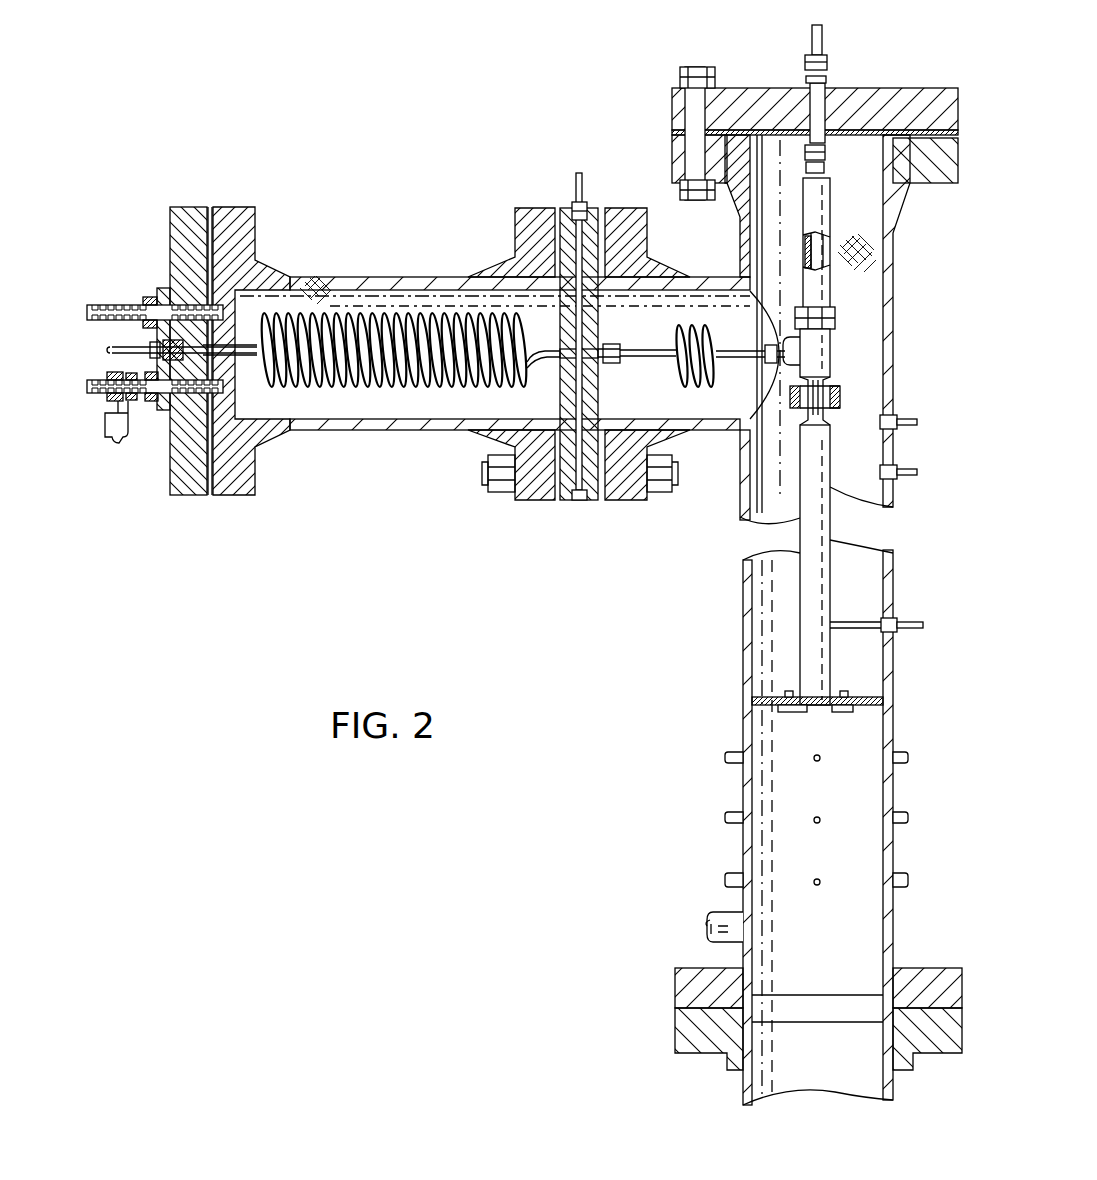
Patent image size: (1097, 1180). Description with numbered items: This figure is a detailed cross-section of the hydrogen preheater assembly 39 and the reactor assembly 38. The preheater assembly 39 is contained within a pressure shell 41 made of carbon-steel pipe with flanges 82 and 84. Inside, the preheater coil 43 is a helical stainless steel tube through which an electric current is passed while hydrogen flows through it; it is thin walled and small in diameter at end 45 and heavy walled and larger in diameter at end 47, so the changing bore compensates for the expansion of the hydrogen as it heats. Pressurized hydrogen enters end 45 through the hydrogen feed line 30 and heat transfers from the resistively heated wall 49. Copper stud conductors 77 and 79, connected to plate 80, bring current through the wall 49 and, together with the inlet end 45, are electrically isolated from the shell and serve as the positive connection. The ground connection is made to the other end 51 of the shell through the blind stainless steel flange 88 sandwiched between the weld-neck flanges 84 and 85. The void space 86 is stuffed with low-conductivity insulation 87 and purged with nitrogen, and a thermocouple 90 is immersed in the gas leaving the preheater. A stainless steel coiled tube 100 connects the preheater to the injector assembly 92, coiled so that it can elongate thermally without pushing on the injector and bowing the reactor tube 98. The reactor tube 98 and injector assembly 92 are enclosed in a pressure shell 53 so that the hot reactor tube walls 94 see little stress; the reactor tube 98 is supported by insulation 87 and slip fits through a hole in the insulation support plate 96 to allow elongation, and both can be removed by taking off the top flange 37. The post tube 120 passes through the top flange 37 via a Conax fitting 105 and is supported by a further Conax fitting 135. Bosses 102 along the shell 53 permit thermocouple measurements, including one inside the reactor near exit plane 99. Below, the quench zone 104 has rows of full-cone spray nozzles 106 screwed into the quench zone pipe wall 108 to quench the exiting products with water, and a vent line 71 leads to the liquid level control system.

The hydrogen feed line 30 is at (114, 347).
The top flange 37 is at (745, 88).
The reactor assembly 38 is at (728, 662).
The hydrogen preheater assembly 39 is at (278, 246).
The pressure shell 41 is at (372, 278).
The preheater coil 43 is at (400, 312).
The inlet end of preheater coil 45 is at (258, 372).
The exit end of preheater coil 47 is at (553, 362).
The wall 49 is at (476, 390).
The end of pressure shell 51 is at (503, 441).
The pressure shell 53 is at (895, 367).
The vent line 71 is at (707, 927).
The copper stud conductor 77 is at (103, 304).
The copper stud conductor 79 is at (100, 393).
The plate 80 is at (172, 295).
The flange 82 is at (226, 236).
The weld-neck flange 84 is at (528, 207).
The weld-neck flange 85 is at (618, 207).
The void space 86 is at (340, 405).
The insulation 87 is at (312, 283).
The blind stainless steel flange 88 is at (581, 502).
The thermocouple 90 is at (583, 176).
The injector assembly 92 is at (852, 358).
The reactor tube walls 94 is at (848, 412).
The insulation support plate 96 is at (885, 698).
The reactor tube 98 is at (893, 498).
The exit plane 99 is at (782, 710).
The coiled tube 100 is at (710, 343).
The bosses 102 is at (903, 470).
The quench zone 104 is at (732, 797).
The Conax fitting 105 is at (830, 64).
The full-cone spray nozzles 106 is at (724, 757).
The quench zone pipe wall 108 is at (724, 820).
The post tube 120 is at (823, 38).
The Conax fitting 135 is at (826, 150).